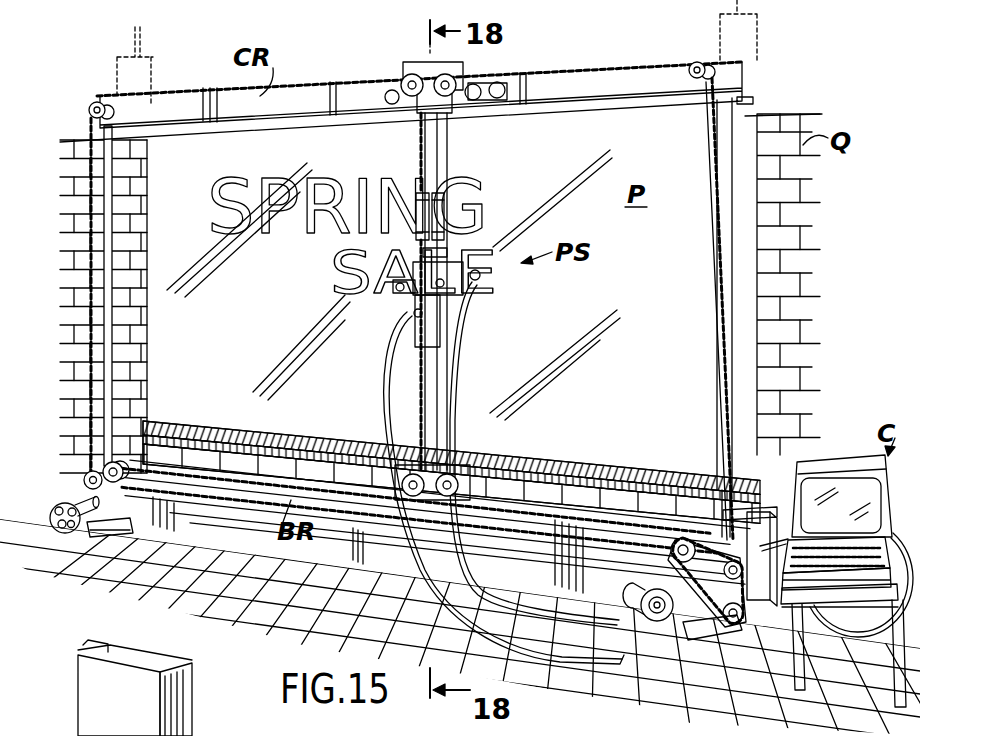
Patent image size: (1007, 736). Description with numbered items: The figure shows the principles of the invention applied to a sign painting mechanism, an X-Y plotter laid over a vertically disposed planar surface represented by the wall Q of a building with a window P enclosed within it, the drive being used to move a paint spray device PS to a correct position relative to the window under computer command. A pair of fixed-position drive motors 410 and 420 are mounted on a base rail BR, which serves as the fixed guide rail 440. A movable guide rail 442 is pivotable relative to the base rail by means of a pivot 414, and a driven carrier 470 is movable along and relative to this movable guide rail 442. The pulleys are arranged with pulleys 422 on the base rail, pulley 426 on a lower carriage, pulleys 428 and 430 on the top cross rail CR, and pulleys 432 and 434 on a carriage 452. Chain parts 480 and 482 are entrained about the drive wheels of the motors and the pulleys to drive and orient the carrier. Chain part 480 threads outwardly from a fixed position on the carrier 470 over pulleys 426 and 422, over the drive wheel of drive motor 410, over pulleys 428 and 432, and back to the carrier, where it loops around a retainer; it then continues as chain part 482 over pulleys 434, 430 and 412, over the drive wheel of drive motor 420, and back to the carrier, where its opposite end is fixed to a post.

The drive motor 410 is at (716, 488).
The pulley 412 is at (86, 474).
The pivot 414 is at (515, 453).
The drive motor 420 is at (713, 635).
The pulley 422 is at (122, 465).
The pulley 426 is at (404, 458).
The pulley 428 is at (697, 62).
The pulley 430 is at (97, 102).
The pulley 432 is at (463, 74).
The pulley 434 is at (407, 76).
The fixed guide rail 440 is at (248, 490).
The movable guide rail 442 is at (440, 350).
The carriage 452 is at (420, 62).
The driven carrier 470 is at (74, 735).
The chain part 480 is at (718, 212).
The chain part 482 is at (85, 187).